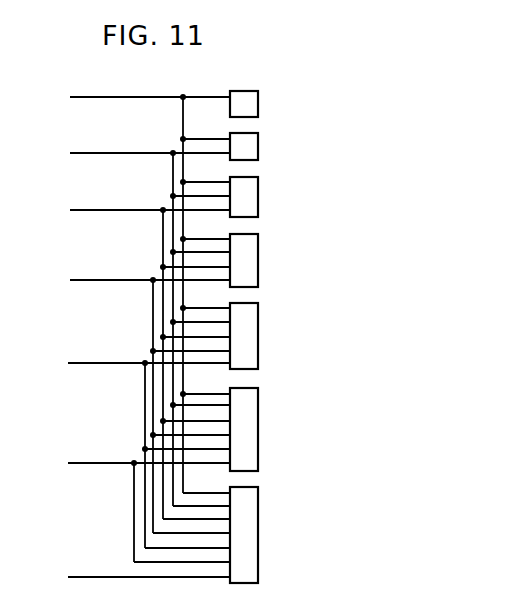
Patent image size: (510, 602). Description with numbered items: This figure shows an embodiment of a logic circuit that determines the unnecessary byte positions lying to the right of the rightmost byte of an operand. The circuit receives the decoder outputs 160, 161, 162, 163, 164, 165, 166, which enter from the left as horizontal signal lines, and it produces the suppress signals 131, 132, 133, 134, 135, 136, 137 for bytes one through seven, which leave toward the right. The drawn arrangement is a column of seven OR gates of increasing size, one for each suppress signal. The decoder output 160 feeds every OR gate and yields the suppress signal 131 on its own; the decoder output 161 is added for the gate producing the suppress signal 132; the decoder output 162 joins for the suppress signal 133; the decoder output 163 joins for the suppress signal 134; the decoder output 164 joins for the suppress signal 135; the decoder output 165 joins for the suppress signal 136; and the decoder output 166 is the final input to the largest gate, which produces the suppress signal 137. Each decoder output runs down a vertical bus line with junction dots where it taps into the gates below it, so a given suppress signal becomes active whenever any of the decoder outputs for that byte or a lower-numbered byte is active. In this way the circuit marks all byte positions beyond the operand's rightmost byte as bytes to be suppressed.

The suppress signal 131 is at (258, 97).
The suppress signal 132 is at (258, 145).
The suppress signal 133 is at (258, 197).
The suppress signal 134 is at (258, 255).
The suppress signal 135 is at (258, 337).
The suppress signal 136 is at (258, 427).
The suppress signal 137 is at (258, 530).
The decoder output 160 is at (131, 289).
The decoder output 161 is at (131, 324).
The decoder output 162 is at (131, 359).
The decoder output 163 is at (131, 401).
The decoder output 164 is at (129, 452).
The decoder output 165 is at (131, 507).
The decoder output 166 is at (129, 577).